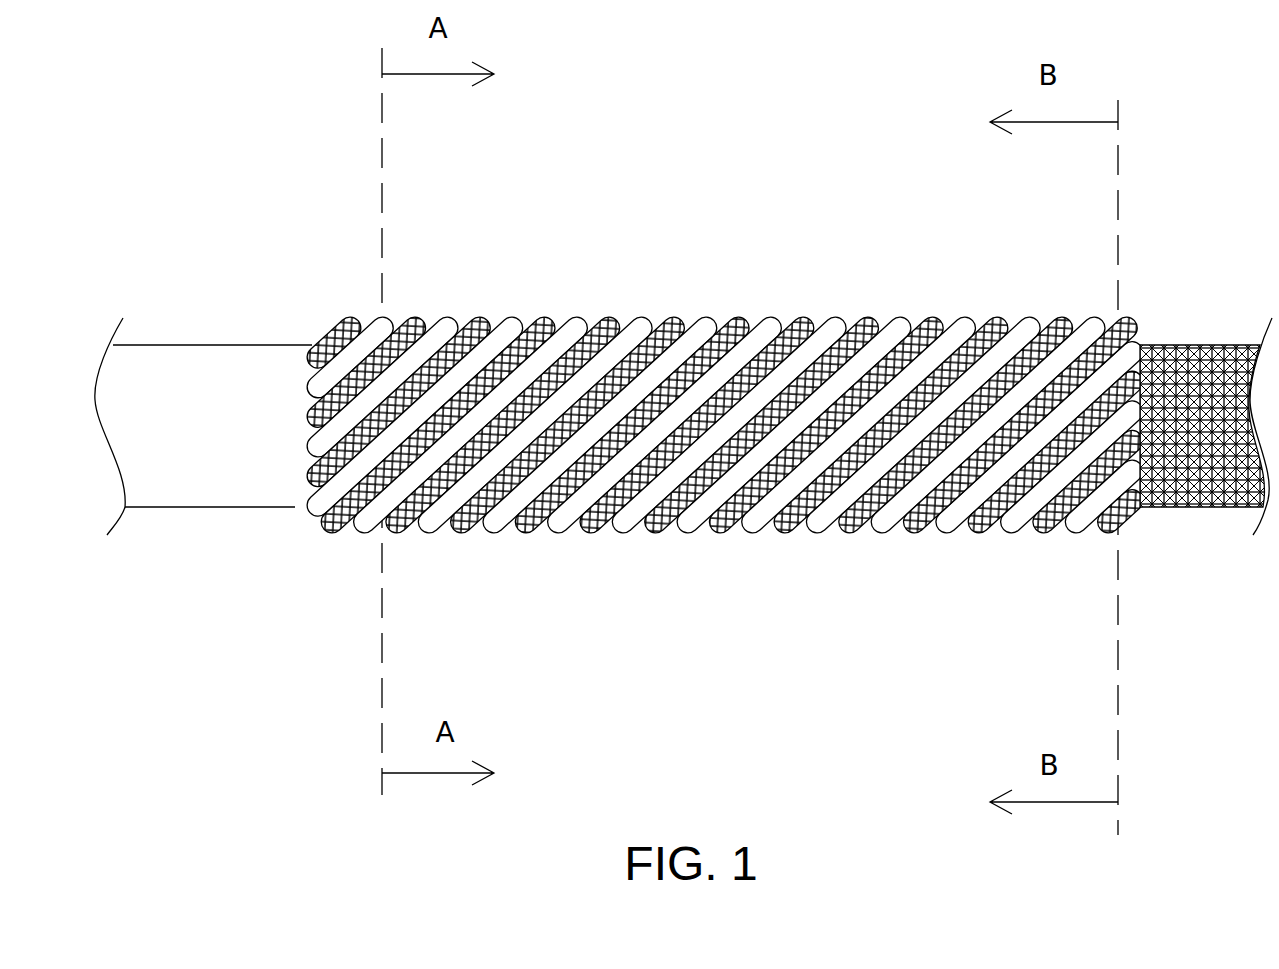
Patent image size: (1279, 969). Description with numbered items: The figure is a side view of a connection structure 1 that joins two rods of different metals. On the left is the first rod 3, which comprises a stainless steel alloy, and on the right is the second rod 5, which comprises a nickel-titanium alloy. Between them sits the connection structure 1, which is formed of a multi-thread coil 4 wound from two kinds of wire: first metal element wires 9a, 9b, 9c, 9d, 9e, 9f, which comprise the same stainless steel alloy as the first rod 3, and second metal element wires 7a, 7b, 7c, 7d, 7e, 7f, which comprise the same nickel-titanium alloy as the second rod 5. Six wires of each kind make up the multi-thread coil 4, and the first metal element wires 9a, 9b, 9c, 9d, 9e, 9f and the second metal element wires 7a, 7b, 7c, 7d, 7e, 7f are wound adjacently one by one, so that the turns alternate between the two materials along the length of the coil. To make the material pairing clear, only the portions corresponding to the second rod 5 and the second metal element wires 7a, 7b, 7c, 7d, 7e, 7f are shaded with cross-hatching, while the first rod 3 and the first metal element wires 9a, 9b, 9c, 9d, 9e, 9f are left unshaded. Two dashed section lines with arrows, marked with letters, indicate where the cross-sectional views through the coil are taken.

The connection structure 1 is at (683, 443).
The first rod 3 is at (265, 372).
The multi-thread coil 4 is at (725, 416).
The second rod 5 is at (1198, 350).
The second metal element wire 7a is at (609, 318).
The second metal element wire 7b is at (674, 318).
The second metal element wire 7c is at (738, 318).
The second metal element wire 7d is at (803, 318).
The second metal element wire 7e is at (868, 318).
The second metal element wire 7f is at (932, 318).
The first metal element wire 9a is at (429, 532).
The first metal element wire 9b is at (494, 532).
The first metal element wire 9c is at (558, 532).
The first metal element wire 9d is at (623, 532).
The first metal element wire 9e is at (688, 532).
The first metal element wire 9f is at (753, 532).